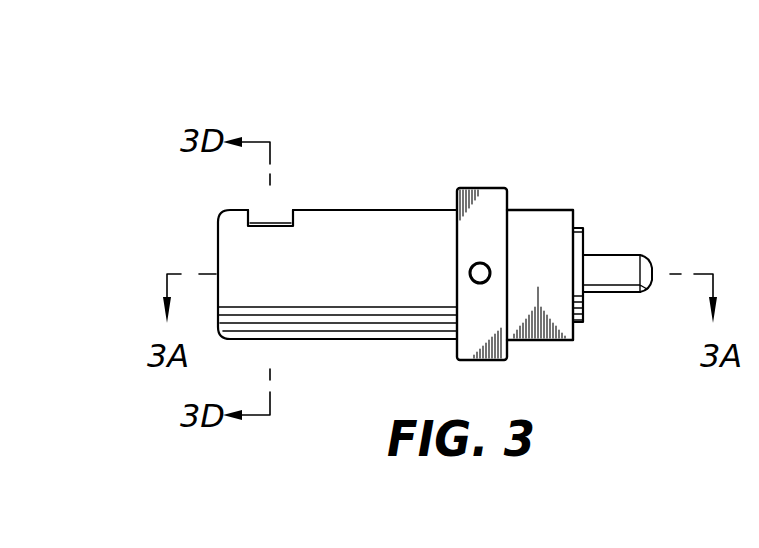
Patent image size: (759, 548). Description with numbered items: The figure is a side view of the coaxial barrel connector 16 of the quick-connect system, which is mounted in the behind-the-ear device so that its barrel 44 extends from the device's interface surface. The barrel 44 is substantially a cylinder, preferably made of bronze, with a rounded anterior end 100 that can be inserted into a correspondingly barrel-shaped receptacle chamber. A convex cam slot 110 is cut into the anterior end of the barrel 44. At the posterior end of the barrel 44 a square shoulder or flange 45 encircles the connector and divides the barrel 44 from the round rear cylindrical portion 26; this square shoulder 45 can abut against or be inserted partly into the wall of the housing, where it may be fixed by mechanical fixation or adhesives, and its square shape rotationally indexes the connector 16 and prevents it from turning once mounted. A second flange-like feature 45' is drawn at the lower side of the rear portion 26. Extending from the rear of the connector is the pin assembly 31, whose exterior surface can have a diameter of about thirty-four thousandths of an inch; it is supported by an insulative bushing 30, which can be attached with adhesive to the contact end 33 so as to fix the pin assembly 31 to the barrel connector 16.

The barrel connector 16 is at (422, 128).
The rounded anterior end 100 is at (222, 221).
The barrel 44 is at (326, 223).
The cam slot 110 is at (279, 207).
The square shoulder 45 is at (491, 230).
The second flange 45' is at (556, 352).
The round rear 26 is at (527, 218).
The bushing 30 is at (580, 228).
The contact end 33 is at (615, 260).
The pin assembly 31 is at (616, 312).